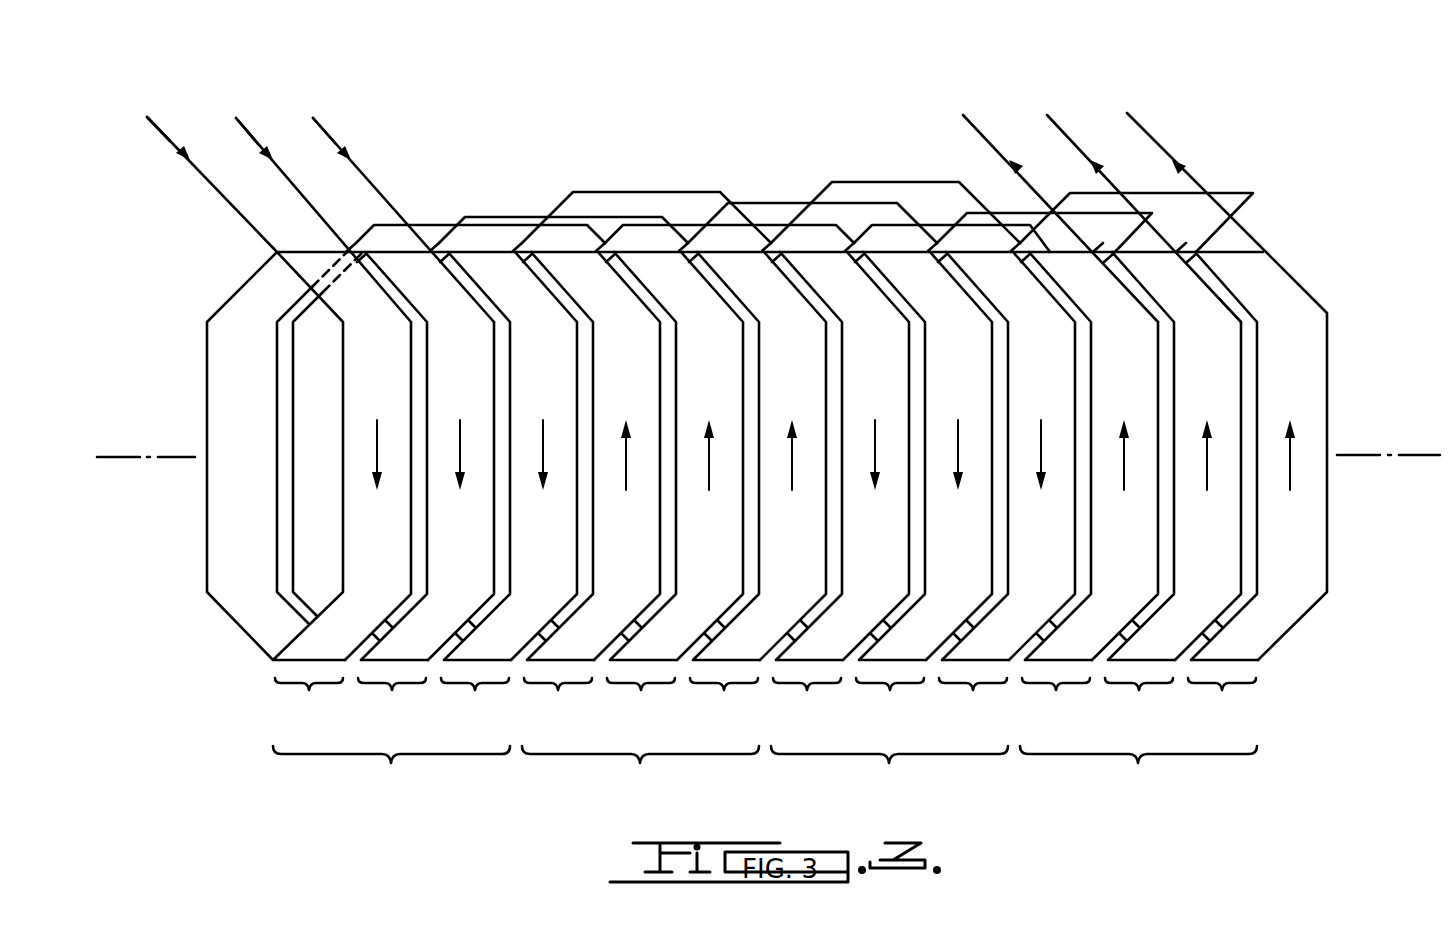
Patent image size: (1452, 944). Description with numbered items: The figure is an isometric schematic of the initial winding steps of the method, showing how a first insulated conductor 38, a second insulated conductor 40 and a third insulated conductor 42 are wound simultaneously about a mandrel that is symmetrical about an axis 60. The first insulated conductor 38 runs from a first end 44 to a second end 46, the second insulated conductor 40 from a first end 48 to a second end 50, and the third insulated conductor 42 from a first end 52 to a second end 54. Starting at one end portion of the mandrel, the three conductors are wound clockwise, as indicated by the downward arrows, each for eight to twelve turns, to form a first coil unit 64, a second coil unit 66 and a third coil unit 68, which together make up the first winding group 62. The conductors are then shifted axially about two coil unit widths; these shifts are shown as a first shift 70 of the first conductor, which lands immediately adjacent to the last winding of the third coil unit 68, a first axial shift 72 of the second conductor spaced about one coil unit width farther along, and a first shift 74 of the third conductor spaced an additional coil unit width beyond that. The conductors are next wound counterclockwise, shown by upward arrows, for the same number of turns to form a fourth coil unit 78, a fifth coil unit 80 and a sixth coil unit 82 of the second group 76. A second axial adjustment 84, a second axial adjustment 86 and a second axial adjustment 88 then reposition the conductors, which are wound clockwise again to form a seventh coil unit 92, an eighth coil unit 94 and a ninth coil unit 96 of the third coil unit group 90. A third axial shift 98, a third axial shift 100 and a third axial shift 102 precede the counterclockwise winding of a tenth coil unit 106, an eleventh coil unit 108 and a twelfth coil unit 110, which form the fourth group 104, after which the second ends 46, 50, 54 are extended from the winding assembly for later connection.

The first insulated conductor 38 is at (220, 197).
The second insulated conductor 40 is at (303, 193).
The third insulated conductor 42 is at (400, 195).
The first end 44 is at (158, 128).
The second end 46 is at (980, 133).
The first end 48 is at (247, 131).
The second end 50 is at (1064, 131).
The first end 52 is at (327, 134).
The second end 54 is at (1148, 134).
The axis 60 is at (118, 450).
The first winding group 62 is at (359, 524).
The first coil unit 64 is at (285, 491).
The second coil unit 66 is at (386, 486).
The third coil unit 68 is at (469, 486).
The first shift 70 is at (440, 225).
The first axial shift 72 is at (497, 217).
The first shift 74 is at (596, 192).
The second group 76 is at (635, 524).
The fourth coil unit 78 is at (552, 486).
The fifth coil unit 80 is at (635, 486).
The sixth coil unit 82 is at (718, 486).
The second axial adjustment 84 is at (612, 225).
The second axial adjustment 86 is at (688, 203).
The second axial adjustment 88 is at (765, 182).
The third coil unit group 90 is at (884, 524).
The seventh coil unit 92 is at (801, 486).
The eighth coil unit 94 is at (884, 486).
The ninth coil unit 96 is at (967, 486).
The third axial shift 98 is at (940, 225).
The third axial shift 100 is at (999, 213).
The third axial shift 102 is at (1225, 193).
The fourth group 104 is at (1133, 524).
The tenth coil unit 106 is at (1050, 486).
The eleventh coil unit 108 is at (1133, 486).
The twelfth coil unit 110 is at (1216, 486).